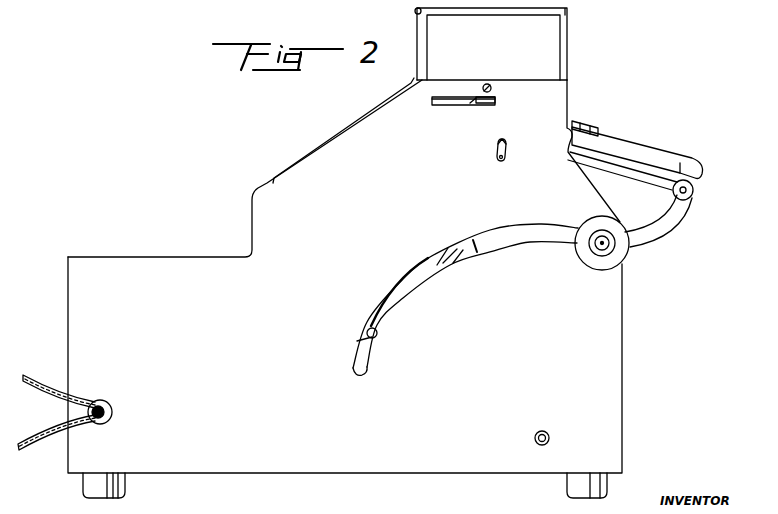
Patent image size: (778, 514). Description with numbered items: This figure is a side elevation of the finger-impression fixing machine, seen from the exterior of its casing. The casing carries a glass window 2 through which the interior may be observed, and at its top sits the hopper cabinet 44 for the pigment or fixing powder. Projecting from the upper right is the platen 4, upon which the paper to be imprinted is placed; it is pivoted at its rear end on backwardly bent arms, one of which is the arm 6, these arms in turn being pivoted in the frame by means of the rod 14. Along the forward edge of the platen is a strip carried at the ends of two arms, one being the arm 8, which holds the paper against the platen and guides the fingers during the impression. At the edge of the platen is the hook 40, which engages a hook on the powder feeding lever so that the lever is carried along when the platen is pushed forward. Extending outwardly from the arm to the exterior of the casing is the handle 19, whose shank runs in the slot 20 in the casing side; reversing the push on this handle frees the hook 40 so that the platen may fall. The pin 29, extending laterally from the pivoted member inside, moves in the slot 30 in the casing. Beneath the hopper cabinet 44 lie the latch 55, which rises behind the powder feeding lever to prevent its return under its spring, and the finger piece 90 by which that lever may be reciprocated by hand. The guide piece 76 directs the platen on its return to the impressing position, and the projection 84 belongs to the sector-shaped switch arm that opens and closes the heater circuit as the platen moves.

The glass window 2 is at (337, 133).
The platen 4 is at (620, 160).
The backwardly bent arm 6 is at (655, 222).
The arm 8 is at (660, 150).
The rod 14 is at (549, 437).
The handle 19 is at (618, 255).
The slot 20 is at (523, 235).
The pin 29 is at (506, 158).
The slot 30 is at (497, 148).
The hook 40 is at (593, 130).
The hopper cabinet 44 is at (567, 51).
The latch 55 is at (468, 105).
The guide piece 76 is at (375, 339).
The projection 84 is at (447, 268).
The finger piece 90 is at (487, 105).